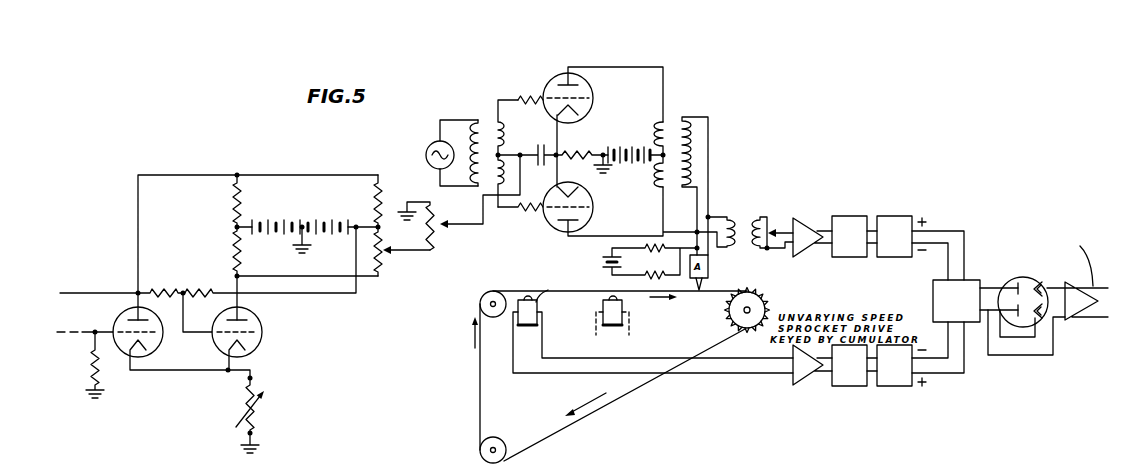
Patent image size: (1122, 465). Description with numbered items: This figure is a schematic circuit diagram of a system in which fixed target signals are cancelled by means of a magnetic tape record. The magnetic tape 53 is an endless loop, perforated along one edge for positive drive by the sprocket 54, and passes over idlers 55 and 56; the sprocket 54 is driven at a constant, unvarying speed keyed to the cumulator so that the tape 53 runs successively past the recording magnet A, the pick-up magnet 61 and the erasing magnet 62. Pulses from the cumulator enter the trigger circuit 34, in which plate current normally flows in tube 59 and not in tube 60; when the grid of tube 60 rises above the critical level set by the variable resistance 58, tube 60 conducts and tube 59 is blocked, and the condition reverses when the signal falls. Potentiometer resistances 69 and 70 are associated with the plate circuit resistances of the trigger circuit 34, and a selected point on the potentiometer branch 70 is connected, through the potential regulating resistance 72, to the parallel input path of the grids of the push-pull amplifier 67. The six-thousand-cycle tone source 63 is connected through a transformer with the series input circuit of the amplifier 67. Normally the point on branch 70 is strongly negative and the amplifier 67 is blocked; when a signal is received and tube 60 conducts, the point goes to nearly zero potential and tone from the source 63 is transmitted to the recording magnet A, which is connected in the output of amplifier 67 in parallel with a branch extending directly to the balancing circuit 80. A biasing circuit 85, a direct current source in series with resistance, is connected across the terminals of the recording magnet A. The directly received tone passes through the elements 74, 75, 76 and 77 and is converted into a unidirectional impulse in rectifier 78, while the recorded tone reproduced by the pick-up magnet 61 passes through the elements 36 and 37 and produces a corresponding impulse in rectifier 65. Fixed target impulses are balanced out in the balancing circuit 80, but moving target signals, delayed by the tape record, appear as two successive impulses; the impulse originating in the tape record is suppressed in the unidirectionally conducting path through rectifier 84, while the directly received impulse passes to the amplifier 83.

The trigger circuit 34 is at (187, 168).
The tone path element 36 is at (790, 385).
The tone path element 37 is at (862, 388).
The magnetic tape 53 is at (550, 431).
The sprocket 54 is at (767, 303).
The idler 55 is at (478, 450).
The idler 56 is at (478, 301).
The variable resistance 58 is at (264, 409).
The tube 59 is at (262, 325).
The tube 60 is at (163, 343).
The pick-up magnet 61 is at (518, 313).
The erasing magnet 62 is at (596, 308).
The tone source 63 is at (433, 145).
The rectifier 65 is at (888, 387).
The push-pull amplifier 67 is at (636, 93).
The potentiometer resistance 69 is at (383, 195).
The potentiometer resistance 70 is at (387, 263).
The potential regulating resistance 72 is at (434, 213).
The direct tone path element 74 is at (737, 216).
The direct tone path element 75 is at (771, 217).
The direct tone path element 76 is at (806, 218).
The direct tone path element 77 is at (851, 216).
The rectifier 78 is at (896, 216).
The balancing circuit 80 is at (979, 280).
The amplifier 83 is at (1071, 323).
The rectifier 84 is at (1024, 278).
The biasing circuit 85 is at (662, 245).